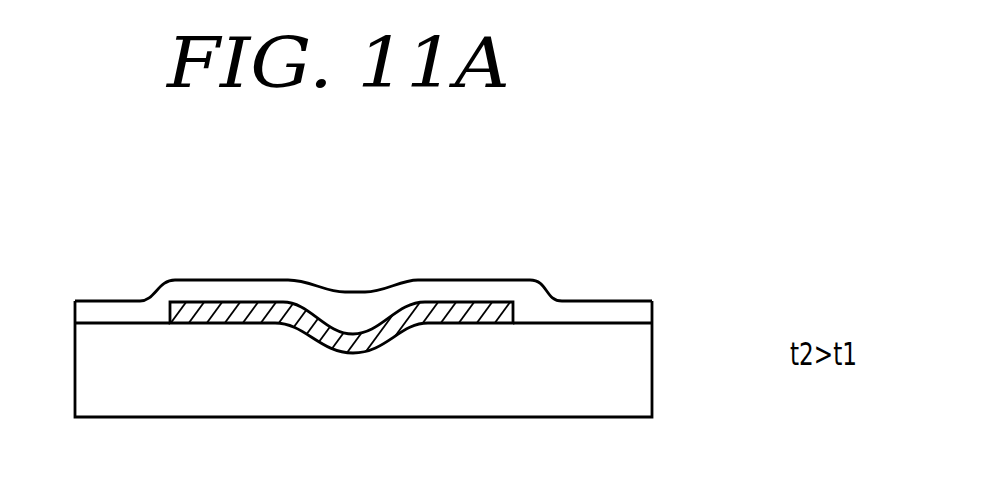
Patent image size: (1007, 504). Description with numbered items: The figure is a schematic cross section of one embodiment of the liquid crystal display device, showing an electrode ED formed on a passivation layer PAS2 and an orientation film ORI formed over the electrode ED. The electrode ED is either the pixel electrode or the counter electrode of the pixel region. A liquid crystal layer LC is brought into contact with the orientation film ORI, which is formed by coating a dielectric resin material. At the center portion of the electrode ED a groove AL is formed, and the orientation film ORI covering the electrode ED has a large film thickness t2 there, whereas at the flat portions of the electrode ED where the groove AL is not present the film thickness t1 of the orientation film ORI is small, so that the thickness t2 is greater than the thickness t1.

The groove AL is at (327, 305).
The liquid crystal layer LC is at (525, 258).
The orientation film ORI is at (642, 313).
The passivation layer PAS2 is at (633, 375).
The electrode ED is at (482, 313).
The film thickness at flat portions t1 is at (193, 347).
The film thickness at center portion t2 is at (353, 373).